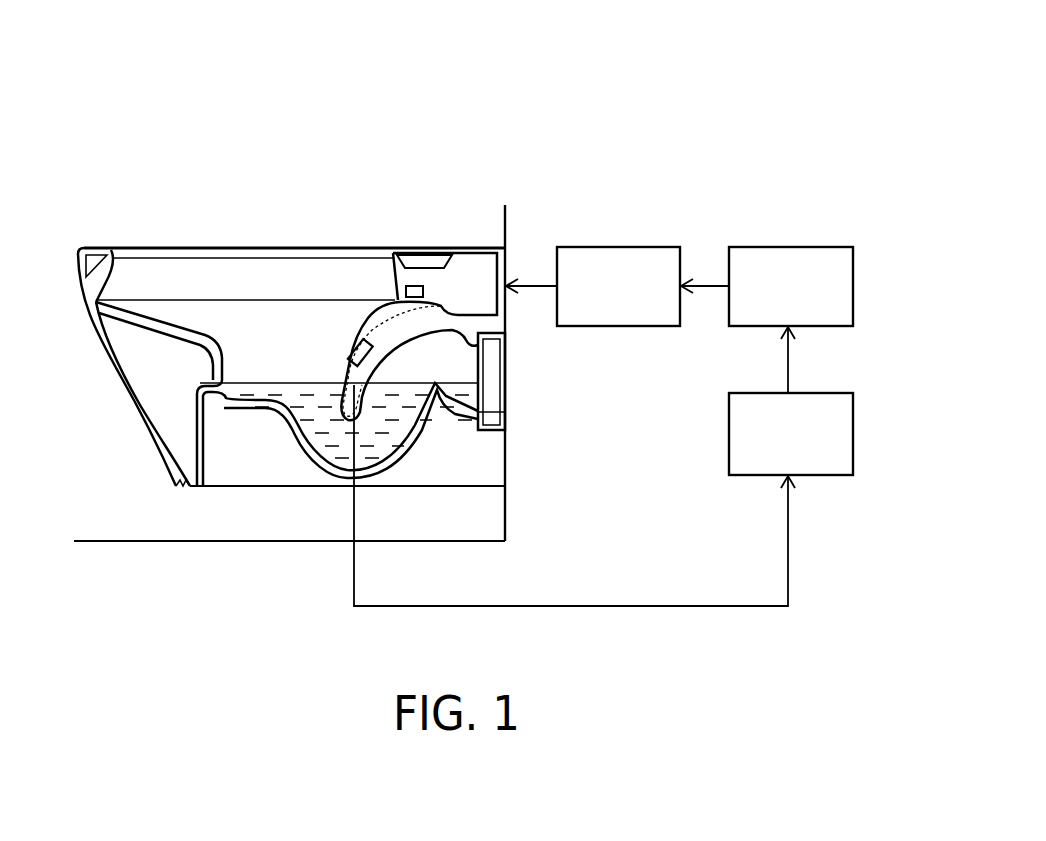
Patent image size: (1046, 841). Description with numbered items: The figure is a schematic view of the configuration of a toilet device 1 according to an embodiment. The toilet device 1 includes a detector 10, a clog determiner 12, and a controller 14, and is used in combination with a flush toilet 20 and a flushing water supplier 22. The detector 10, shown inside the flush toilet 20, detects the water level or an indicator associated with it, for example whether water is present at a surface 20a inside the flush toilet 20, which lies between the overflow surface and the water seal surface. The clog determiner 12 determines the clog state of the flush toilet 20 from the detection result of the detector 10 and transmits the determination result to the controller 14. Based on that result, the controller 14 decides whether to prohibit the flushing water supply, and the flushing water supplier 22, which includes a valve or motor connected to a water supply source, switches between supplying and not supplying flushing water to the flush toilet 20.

The toilet device 1 is at (787, 88).
The detector 10 is at (378, 340).
The clog determiner 12 is at (820, 393).
The controller 14 is at (822, 247).
The flush toilet 20 is at (100, 247).
The surface 20a is at (340, 333).
The flushing water supplier 22 is at (652, 247).